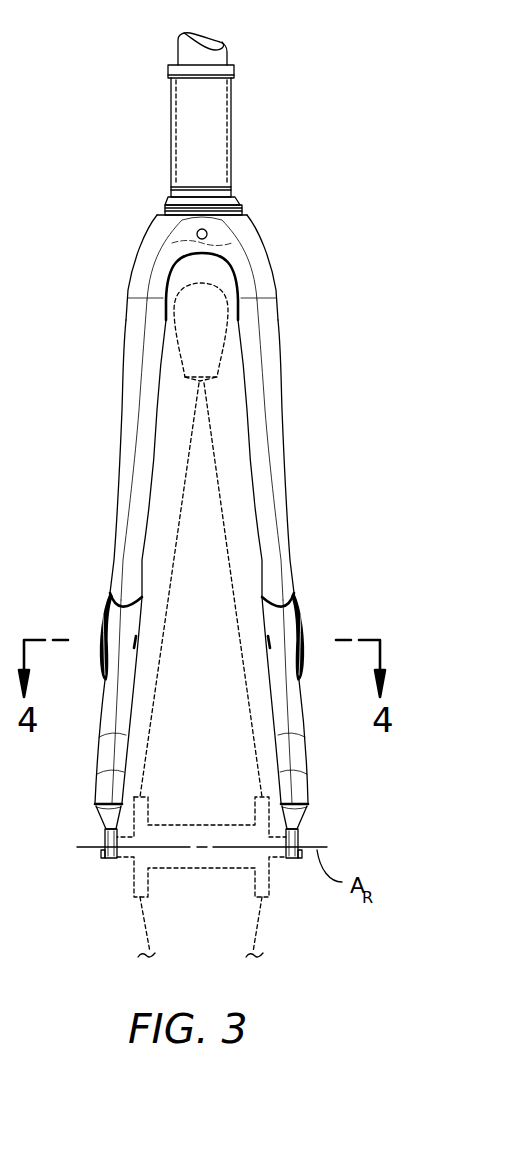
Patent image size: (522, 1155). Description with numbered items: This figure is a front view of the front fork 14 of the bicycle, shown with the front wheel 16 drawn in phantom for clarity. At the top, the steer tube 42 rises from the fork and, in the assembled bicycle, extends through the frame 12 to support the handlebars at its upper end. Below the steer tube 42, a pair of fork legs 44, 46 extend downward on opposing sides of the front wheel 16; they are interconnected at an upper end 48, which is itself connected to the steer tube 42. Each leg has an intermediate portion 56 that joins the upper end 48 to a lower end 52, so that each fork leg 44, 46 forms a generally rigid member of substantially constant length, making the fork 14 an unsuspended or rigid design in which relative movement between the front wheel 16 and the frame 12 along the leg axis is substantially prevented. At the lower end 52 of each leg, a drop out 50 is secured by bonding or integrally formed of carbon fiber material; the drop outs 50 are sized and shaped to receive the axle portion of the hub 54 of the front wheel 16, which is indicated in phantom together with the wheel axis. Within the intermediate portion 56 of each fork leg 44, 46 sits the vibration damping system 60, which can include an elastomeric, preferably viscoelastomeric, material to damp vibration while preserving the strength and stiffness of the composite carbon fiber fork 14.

The steer tube 42 is at (229, 55).
The frame 12 is at (235, 133).
The upper end 48 is at (253, 220).
The front fork 14 is at (268, 240).
The front wheel 16 is at (225, 282).
The fork leg 44 is at (101, 323).
The fork leg 46 is at (301, 322).
The intermediate portion 56 is at (122, 537).
The vibration damping system 60 is at (82, 629).
The lower end 52 is at (100, 750).
The drop out 50 is at (95, 815).
The hub 54 is at (193, 870).